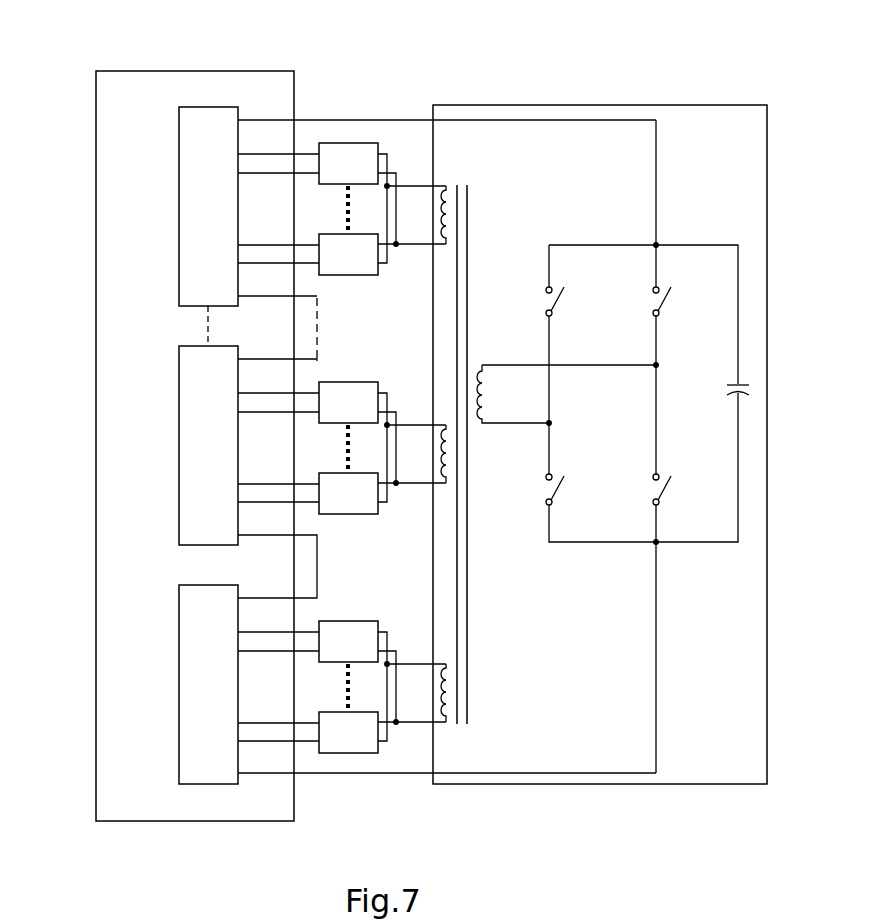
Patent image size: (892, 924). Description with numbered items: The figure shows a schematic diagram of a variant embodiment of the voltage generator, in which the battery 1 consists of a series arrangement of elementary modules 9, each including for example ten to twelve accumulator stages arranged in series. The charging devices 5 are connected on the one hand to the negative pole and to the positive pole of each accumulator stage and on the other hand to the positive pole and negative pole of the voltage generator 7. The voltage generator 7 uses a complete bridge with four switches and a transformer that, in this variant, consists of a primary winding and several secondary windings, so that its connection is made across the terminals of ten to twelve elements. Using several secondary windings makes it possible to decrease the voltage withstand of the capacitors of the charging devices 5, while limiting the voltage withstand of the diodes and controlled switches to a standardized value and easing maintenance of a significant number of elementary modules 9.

The battery 1 is at (120, 71).
The charging device 5 is at (382, 443).
The voltage generator 7 is at (713, 105).
The elementary module 9 is at (179, 148).